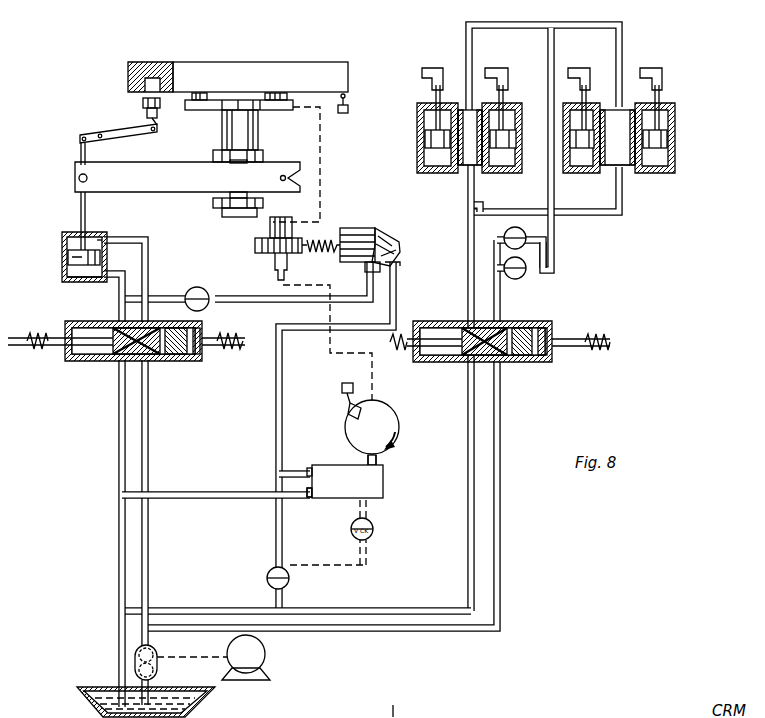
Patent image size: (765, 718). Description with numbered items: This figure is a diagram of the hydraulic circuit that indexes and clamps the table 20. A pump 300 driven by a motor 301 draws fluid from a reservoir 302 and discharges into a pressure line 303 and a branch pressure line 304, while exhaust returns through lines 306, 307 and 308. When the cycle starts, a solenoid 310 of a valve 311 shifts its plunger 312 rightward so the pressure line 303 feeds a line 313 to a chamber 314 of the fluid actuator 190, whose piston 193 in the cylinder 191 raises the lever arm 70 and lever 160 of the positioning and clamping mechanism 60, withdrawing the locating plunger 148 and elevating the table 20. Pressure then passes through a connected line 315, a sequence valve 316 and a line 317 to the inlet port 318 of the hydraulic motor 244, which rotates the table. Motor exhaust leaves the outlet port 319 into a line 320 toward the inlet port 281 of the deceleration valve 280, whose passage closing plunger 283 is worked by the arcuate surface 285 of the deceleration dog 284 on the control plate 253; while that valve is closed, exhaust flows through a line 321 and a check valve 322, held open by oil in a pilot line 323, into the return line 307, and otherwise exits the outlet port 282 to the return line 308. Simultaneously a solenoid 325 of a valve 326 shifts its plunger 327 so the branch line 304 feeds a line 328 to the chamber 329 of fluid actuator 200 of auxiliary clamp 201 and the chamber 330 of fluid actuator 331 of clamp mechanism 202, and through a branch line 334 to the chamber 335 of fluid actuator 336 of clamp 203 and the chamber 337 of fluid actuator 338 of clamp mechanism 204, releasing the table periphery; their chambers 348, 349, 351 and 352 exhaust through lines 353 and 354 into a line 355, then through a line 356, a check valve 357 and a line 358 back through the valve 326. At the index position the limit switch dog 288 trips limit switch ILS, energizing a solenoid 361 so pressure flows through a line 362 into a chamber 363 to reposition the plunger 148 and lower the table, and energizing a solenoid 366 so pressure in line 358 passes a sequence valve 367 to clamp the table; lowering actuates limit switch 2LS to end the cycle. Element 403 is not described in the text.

The table 20 is at (273, 76).
The positioning and clamping mechanism 60 is at (80, 124).
The lever arm 70 is at (154, 162).
The locating plunger 148 is at (160, 113).
The lever 160 is at (113, 129).
The fluid actuator 190 is at (69, 251).
The cylinder 191 is at (62, 233).
The piston 193 is at (68, 258).
The fluid actuator 200 is at (407, 120).
The auxiliary clamp 201 is at (448, 109).
The auxiliary clamp mechanism 202 is at (510, 117).
The auxiliary clamp 203 is at (611, 119).
The clamp mechanism 204 is at (684, 108).
The hydraulic motor 244 is at (397, 212).
The control plate 253 is at (391, 417).
The deceleration valve 280 is at (368, 490).
The inlet port 281 is at (310, 466).
The outlet port 282 is at (308, 499).
The passage closing plunger 283 is at (366, 462).
The deceleration dog 284 is at (400, 430).
The arcuate plunger contact surface 285 is at (378, 458).
The limit switch dog 288 is at (346, 410).
The pump 300 is at (157, 670).
The motor 301 is at (256, 653).
The reservoir 302 is at (190, 706).
The pressure line 303 is at (148, 539).
The branch pressure line 304 is at (441, 630).
The exhaust line 306 is at (120, 549).
The exhaust line 307 is at (217, 609).
The exhaust line 308 is at (202, 477).
The solenoid 310 is at (28, 350).
The valve 311 is at (132, 361).
The plunger 312 is at (113, 362).
The line 313 is at (118, 290).
The chamber 314 is at (83, 280).
The line 315 is at (180, 282).
The sequence valve 316 is at (202, 288).
The line 317 is at (222, 300).
The inlet port 318 is at (363, 270).
The outlet port 319 is at (398, 258).
The line 320 is at (397, 306).
The line 321 is at (276, 545).
The check valve 322 is at (268, 573).
The pilot line 323 is at (380, 567).
The solenoid 325 is at (388, 346).
The valve 326 is at (493, 364).
The plunger 327 is at (528, 358).
The line 328 is at (468, 283).
The chamber 329 is at (430, 156).
The chamber 330 is at (472, 176).
The fluid actuator 331 is at (505, 160).
The branch line 334 is at (475, 207).
The chamber 335 is at (585, 160).
The fluid actuator 336 is at (615, 143).
The chamber 337 is at (675, 170).
The fluid actuator 338 is at (648, 120).
The chamber 348 is at (430, 120).
The chamber 349 is at (510, 115).
The chamber 351 is at (592, 112).
The chamber 352 is at (663, 113).
The line 353 is at (466, 30).
The line 354 is at (621, 42).
The line 355 is at (555, 262).
The line 356 is at (547, 243).
The check valve 357 is at (504, 235).
The line 358 is at (494, 263).
The solenoid 361 is at (223, 352).
The line 362 is at (133, 243).
The chamber 363 is at (92, 243).
The solenoid 366 is at (609, 334).
The sequence valve 367 is at (517, 281).
The limit switch 2LS is at (350, 109).
The limit switch ILS is at (341, 386).
The conduit 403 is at (405, 714).